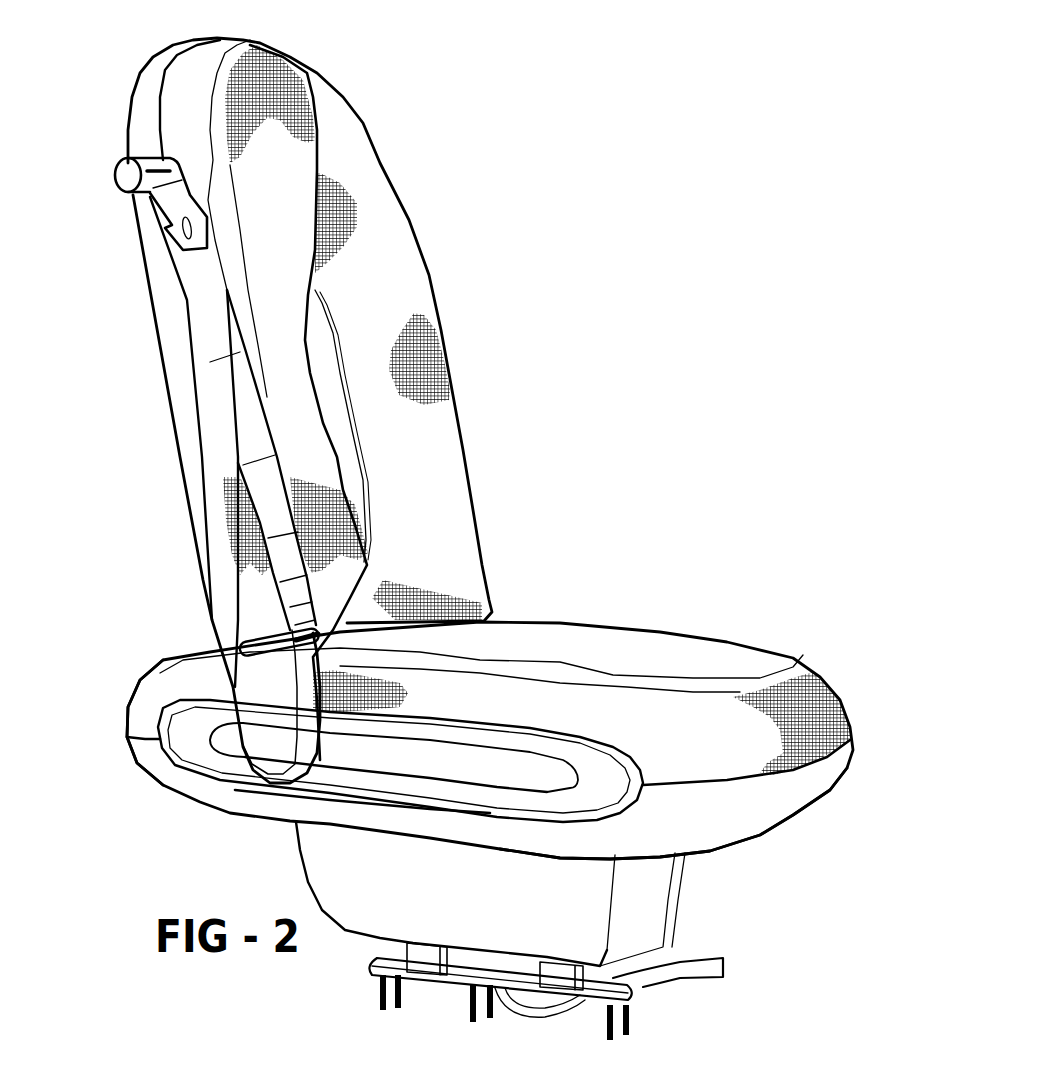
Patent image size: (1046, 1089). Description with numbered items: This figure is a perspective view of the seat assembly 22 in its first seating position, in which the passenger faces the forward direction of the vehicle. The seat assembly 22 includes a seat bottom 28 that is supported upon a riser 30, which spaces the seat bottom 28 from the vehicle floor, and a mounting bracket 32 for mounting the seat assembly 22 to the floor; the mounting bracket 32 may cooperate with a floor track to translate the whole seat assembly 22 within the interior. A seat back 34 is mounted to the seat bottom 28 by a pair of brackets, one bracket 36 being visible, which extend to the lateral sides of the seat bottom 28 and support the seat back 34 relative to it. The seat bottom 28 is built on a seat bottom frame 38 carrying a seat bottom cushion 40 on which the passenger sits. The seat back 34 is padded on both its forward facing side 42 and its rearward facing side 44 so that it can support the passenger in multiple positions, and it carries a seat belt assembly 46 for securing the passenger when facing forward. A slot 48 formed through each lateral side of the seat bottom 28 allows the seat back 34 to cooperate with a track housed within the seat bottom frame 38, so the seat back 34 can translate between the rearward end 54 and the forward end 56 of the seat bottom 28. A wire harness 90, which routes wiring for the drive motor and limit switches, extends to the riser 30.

The seat assembly 22 is at (600, 438).
The seat bottom 28 is at (801, 658).
The riser 30 is at (685, 877).
The mounting bracket 32 is at (633, 1003).
The seat back 34 is at (420, 312).
The bracket 36 is at (242, 748).
The seat bottom frame 38 is at (793, 800).
The seat bottom cushion 40 is at (850, 720).
The forward facing side 42 is at (372, 138).
The rearward facing side 44 is at (128, 105).
The seat belt assembly 46 is at (230, 388).
The slot 48 is at (490, 787).
The rearward end 54 is at (128, 722).
The forward end 56 is at (850, 740).
The wire harness 90 is at (697, 977).